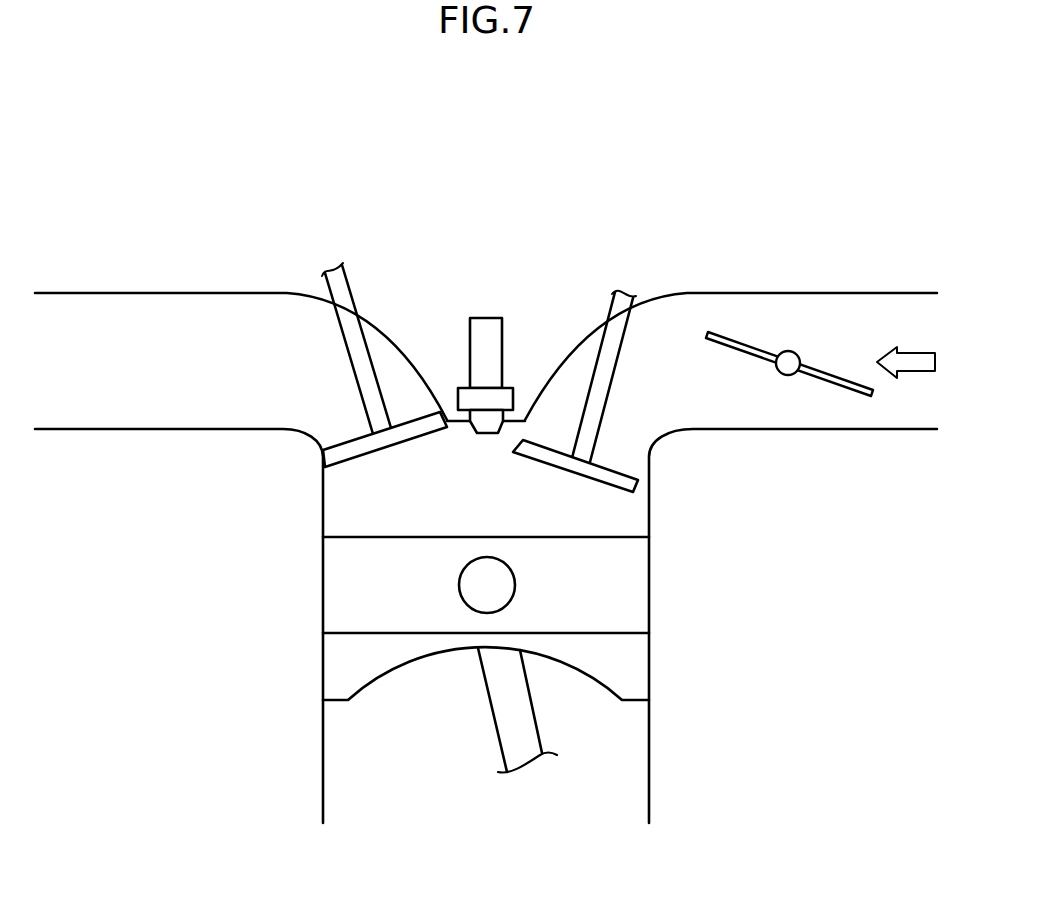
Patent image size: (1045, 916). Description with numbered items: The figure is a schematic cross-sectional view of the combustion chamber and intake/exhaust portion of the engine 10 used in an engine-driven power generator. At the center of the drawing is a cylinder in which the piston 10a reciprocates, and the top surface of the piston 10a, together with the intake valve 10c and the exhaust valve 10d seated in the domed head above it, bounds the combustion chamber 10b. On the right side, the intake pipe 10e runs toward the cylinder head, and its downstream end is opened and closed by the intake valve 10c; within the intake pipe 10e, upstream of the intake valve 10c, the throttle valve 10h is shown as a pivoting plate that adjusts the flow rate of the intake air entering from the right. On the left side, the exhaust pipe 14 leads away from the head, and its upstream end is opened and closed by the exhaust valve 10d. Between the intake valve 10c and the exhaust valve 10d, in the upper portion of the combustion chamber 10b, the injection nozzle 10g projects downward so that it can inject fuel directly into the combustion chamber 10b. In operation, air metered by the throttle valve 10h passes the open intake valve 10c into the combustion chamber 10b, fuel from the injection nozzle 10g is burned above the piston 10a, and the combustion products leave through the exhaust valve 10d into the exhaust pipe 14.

The engine 10 is at (228, 191).
The exhaust pipe 14 is at (165, 300).
The piston 10a is at (630, 583).
The combustion chamber 10b is at (630, 513).
The intake valve 10c is at (597, 458).
The exhaust valve 10d is at (348, 433).
The intake pipe 10e is at (737, 298).
The injection nozzle 10g is at (470, 340).
The throttle valve 10h is at (818, 370).